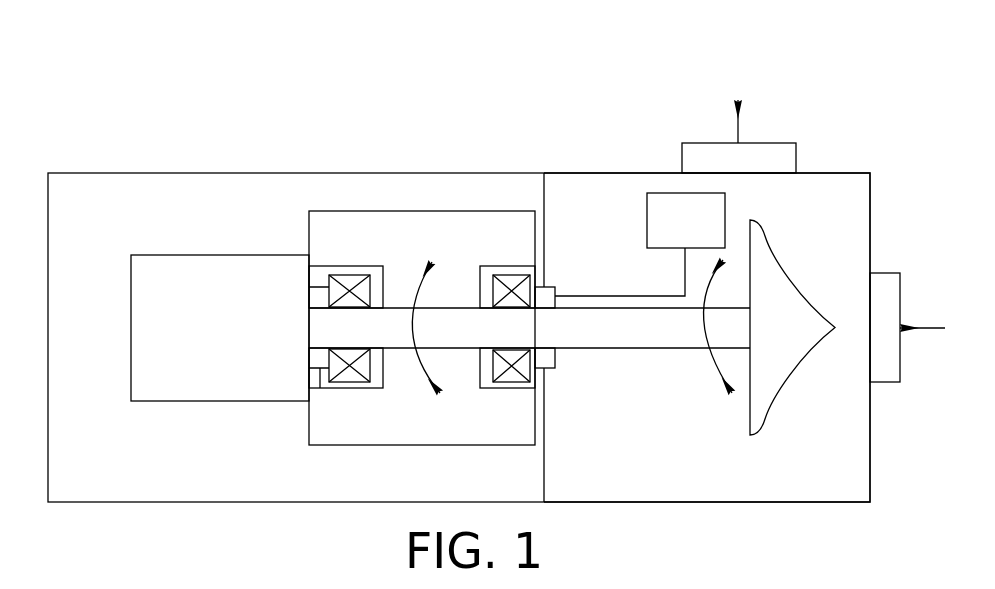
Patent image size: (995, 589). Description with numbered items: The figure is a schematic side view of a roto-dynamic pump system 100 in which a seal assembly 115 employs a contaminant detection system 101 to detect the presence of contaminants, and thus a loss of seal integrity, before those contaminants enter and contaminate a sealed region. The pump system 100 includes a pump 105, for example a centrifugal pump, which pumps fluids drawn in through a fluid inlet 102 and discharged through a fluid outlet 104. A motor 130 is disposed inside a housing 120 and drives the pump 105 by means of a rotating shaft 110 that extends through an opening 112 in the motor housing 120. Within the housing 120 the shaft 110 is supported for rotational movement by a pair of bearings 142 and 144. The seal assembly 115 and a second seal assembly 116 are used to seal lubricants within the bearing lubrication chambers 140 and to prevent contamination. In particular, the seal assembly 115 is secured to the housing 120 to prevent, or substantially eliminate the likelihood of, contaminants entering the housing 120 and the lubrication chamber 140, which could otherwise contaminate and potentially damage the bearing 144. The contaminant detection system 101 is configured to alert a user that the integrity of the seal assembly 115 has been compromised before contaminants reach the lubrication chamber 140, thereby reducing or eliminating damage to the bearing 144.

The roto-dynamic pump system 100 is at (118, 112).
The contaminant detection system 101 is at (662, 236).
The fluid inlet 102 is at (883, 273).
The fluid outlet 104 is at (762, 142).
The pump 105 is at (572, 216).
The rotating shaft 110 is at (635, 333).
The opening 112 is at (545, 368).
The seal assembly 115 is at (555, 287).
The second seal assembly 116 is at (322, 388).
The housing 120 is at (84, 221).
The motor 130 is at (166, 306).
The bearing lubrication chamber 140 is at (480, 277).
The bearing 142 is at (358, 383).
The bearing 144 is at (513, 382).